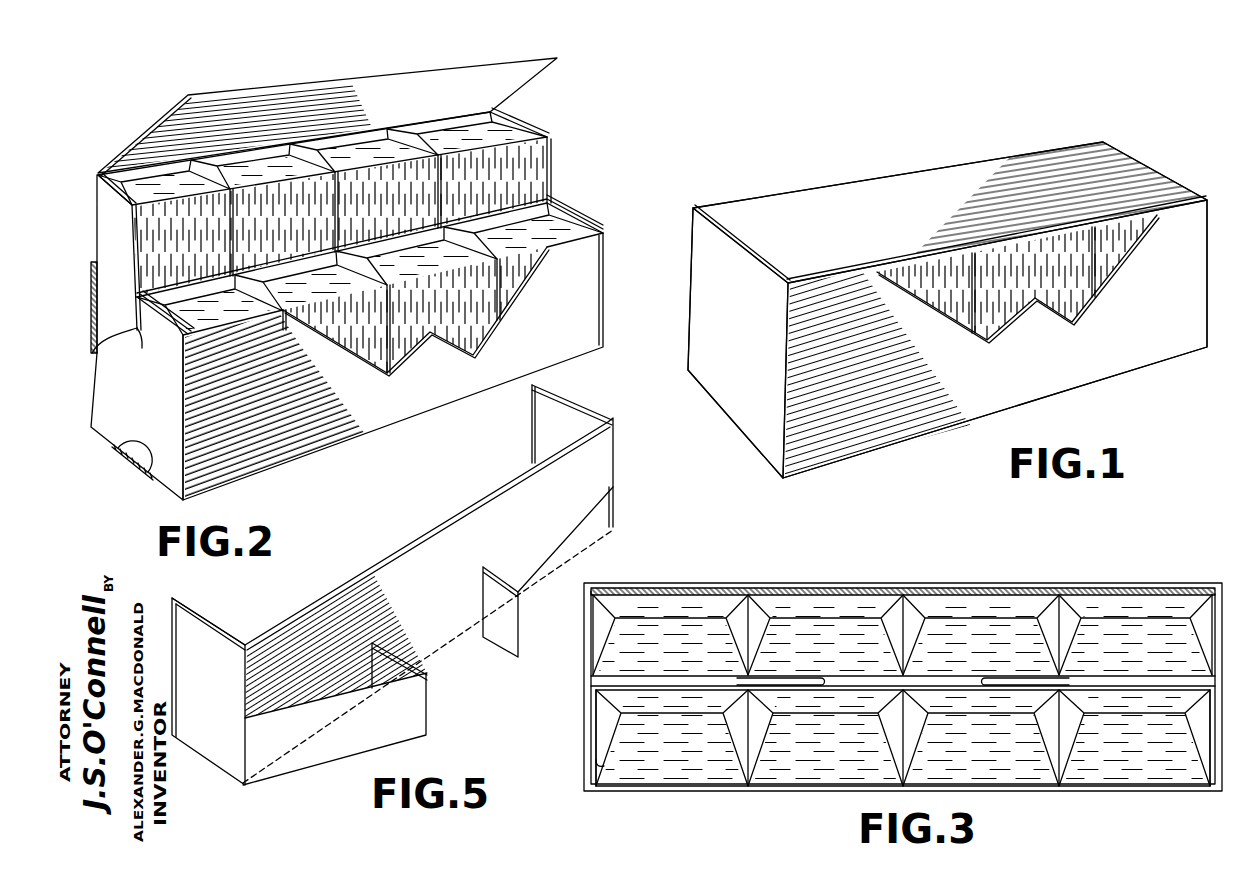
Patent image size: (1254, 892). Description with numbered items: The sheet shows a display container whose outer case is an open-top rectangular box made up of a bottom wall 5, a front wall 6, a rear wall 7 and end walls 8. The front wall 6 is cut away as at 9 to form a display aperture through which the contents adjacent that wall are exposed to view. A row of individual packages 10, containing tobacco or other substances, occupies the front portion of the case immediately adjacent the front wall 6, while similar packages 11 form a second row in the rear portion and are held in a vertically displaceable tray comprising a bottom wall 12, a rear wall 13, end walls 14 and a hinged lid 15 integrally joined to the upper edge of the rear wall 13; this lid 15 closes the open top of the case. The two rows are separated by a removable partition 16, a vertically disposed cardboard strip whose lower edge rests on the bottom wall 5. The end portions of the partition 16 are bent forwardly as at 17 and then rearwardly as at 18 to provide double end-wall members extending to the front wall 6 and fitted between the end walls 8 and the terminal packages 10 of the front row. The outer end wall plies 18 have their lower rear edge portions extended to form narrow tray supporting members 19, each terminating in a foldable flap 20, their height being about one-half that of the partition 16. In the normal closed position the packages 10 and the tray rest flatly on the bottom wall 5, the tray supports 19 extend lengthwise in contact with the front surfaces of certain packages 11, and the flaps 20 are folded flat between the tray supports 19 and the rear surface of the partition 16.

In FIG. 2, the bottom wall 5 is at (130, 460).
In FIG. 1, the bottom wall 5 is at (733, 400).
In FIG. 2, the front wall 6 is at (393, 366).
In FIG. 1, the front wall 6 is at (995, 339).
In FIG. 3, the front wall 6 is at (668, 790).
In FIG. 2, the rear wall 7 is at (91, 286).
In FIG. 3, the rear wall 7 is at (805, 590).
In FIG. 2, the end walls 8 is at (137, 417).
In FIG. 1, the end walls 8 is at (738, 343).
In FIG. 3, the end walls 8 is at (585, 702).
In FIG. 2, the cut away 9 is at (414, 354).
In FIG. 1, the cut away 9 is at (1098, 287).
In FIG. 2, the individual packages 10 is at (288, 315).
In FIG. 1, the individual packages 10 is at (1088, 262).
In FIG. 3, the individual packages 10 is at (748, 782).
In FIG. 2, the packages 11 is at (402, 126).
In FIG. 3, the packages 11 is at (752, 592).
In FIG. 2, the bottom wall 12 is at (92, 362).
In FIG. 3, the rear wall 13 is at (862, 595).
In FIG. 2, the end walls 14 is at (552, 137).
In FIG. 3, the end walls 14 is at (1212, 620).
In FIG. 2, the hinged lid 15 is at (320, 82).
In FIG. 1, the hinged lid 15 is at (872, 190).
In FIG. 2, the removable partition 16 is at (292, 265).
In FIG. 5, the removable partition 16 is at (466, 506).
In FIG. 2, the forwardly bent end portion 17 is at (172, 303).
In FIG. 3, the forwardly bent end portion 17 is at (596, 765).
In FIG. 5, the forwardly bent end portion 17 is at (205, 613).
In FIG. 2, the outer end wall ply 18 is at (140, 333).
In FIG. 3, the outer end wall ply 18 is at (590, 757).
In FIG. 5, the outer end wall ply 18 is at (594, 397).
In FIG. 3, the tray supporting member 19 is at (662, 678).
In FIG. 5, the tray supporting member 19 is at (373, 733).
In FIG. 3, the foldable flap 20 is at (778, 678).
In FIG. 5, the foldable flap 20 is at (395, 655).